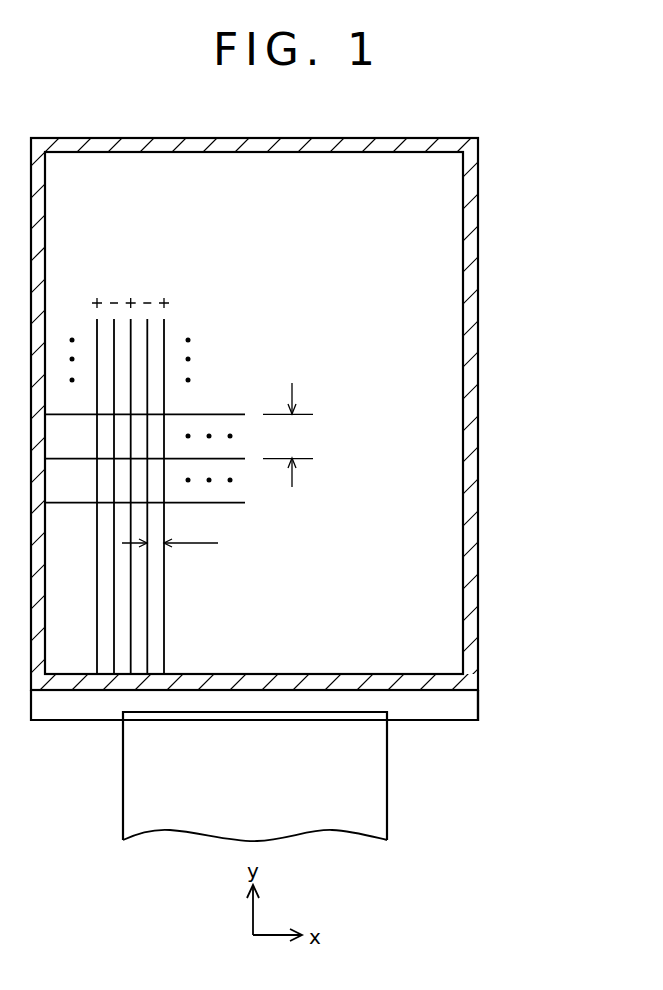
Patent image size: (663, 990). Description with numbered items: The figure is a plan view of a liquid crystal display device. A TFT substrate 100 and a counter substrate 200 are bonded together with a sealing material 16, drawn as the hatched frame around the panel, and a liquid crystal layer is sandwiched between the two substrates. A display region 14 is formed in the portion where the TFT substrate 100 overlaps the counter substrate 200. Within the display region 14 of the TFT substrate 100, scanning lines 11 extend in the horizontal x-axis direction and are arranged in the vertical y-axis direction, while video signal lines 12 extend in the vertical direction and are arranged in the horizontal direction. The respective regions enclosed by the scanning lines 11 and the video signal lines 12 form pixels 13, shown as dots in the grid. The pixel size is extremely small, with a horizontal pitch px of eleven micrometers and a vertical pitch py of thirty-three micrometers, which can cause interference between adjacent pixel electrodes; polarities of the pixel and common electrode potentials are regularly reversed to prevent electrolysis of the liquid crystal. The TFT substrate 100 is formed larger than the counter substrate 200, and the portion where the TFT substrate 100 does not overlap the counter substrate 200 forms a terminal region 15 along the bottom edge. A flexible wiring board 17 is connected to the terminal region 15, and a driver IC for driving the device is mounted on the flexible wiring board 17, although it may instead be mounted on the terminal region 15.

The scanning lines 11 is at (233, 413).
The video signal lines 12 is at (164, 338).
The pixels 13 is at (167, 418).
The display region 14 is at (430, 345).
The terminal region 15 is at (447, 710).
The sealing material 16 is at (470, 395).
The flexible wiring board 17 is at (130, 784).
The TFT substrate 100 is at (478, 705).
The counter substrate 200 is at (331, 414).